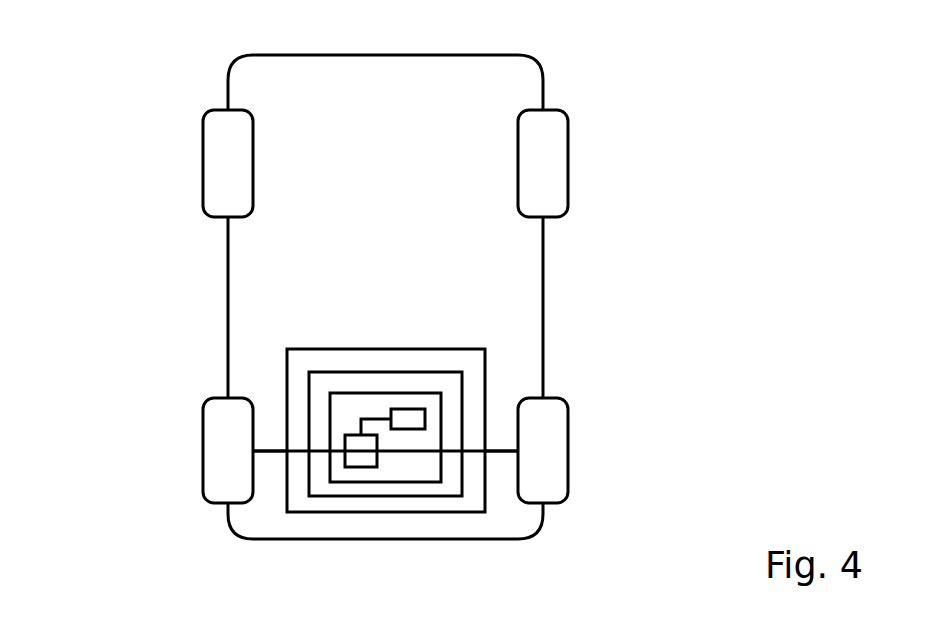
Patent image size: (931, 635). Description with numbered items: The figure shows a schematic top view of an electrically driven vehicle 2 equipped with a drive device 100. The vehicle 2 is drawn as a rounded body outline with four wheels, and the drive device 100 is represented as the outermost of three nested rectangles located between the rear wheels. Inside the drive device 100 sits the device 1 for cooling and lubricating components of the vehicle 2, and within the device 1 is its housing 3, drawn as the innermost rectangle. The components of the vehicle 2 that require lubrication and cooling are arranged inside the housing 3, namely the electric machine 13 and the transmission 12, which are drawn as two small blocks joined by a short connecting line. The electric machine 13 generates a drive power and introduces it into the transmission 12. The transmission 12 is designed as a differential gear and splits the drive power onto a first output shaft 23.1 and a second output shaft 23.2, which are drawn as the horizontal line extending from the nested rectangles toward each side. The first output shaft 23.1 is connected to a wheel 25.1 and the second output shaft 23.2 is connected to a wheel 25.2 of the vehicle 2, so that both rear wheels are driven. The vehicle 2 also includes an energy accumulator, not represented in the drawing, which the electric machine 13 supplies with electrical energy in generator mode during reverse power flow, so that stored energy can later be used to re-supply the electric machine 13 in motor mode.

The vehicle 2 is at (588, 85).
The device 1 is at (430, 372).
The drive device 100 is at (473, 349).
The housing 3 is at (441, 405).
The transmission 12 is at (357, 445).
The electric machine 13 is at (403, 418).
The wheel 25.1 is at (222, 427).
The wheel 25.2 is at (550, 443).
The first output shaft 23.1 is at (276, 451).
The second output shaft 23.2 is at (495, 451).